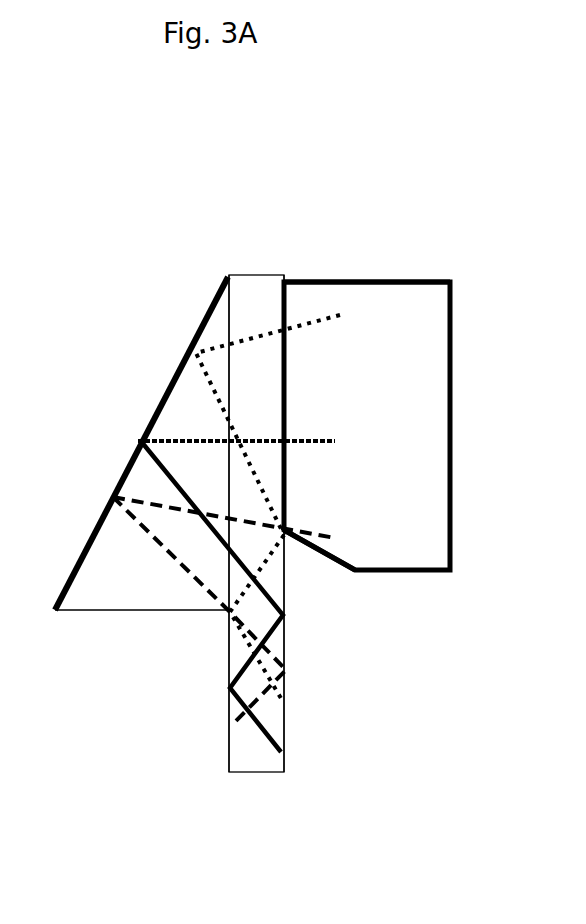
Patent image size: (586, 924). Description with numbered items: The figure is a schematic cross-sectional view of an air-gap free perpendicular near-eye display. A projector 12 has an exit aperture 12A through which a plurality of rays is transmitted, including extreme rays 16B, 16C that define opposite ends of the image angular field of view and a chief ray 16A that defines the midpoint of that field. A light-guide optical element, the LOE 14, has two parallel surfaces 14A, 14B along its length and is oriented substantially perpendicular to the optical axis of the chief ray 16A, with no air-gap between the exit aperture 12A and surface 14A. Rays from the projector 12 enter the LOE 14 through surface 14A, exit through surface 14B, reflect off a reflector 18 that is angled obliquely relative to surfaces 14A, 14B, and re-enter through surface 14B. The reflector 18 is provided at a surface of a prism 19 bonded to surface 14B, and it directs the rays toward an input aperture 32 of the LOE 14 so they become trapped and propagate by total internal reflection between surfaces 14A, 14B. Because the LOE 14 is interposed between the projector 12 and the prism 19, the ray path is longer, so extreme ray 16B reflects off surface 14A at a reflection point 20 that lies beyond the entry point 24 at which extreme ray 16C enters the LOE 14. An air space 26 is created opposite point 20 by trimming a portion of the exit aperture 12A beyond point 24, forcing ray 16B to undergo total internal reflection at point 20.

The projector 12 is at (417, 575).
The exit aperture 12A is at (290, 292).
The LOE 14 is at (258, 288).
The surface 14A is at (287, 727).
The surface 14B is at (228, 748).
The chief ray 16A is at (263, 442).
The extreme ray 16B is at (290, 419).
The extreme ray 16C is at (309, 617).
The reflector 18 is at (200, 313).
The prism 19 is at (142, 595).
The reflection point 20 is at (275, 538).
The entry point 24 is at (288, 528).
The air space 26 is at (328, 565).
The input aperture 32 is at (230, 612).